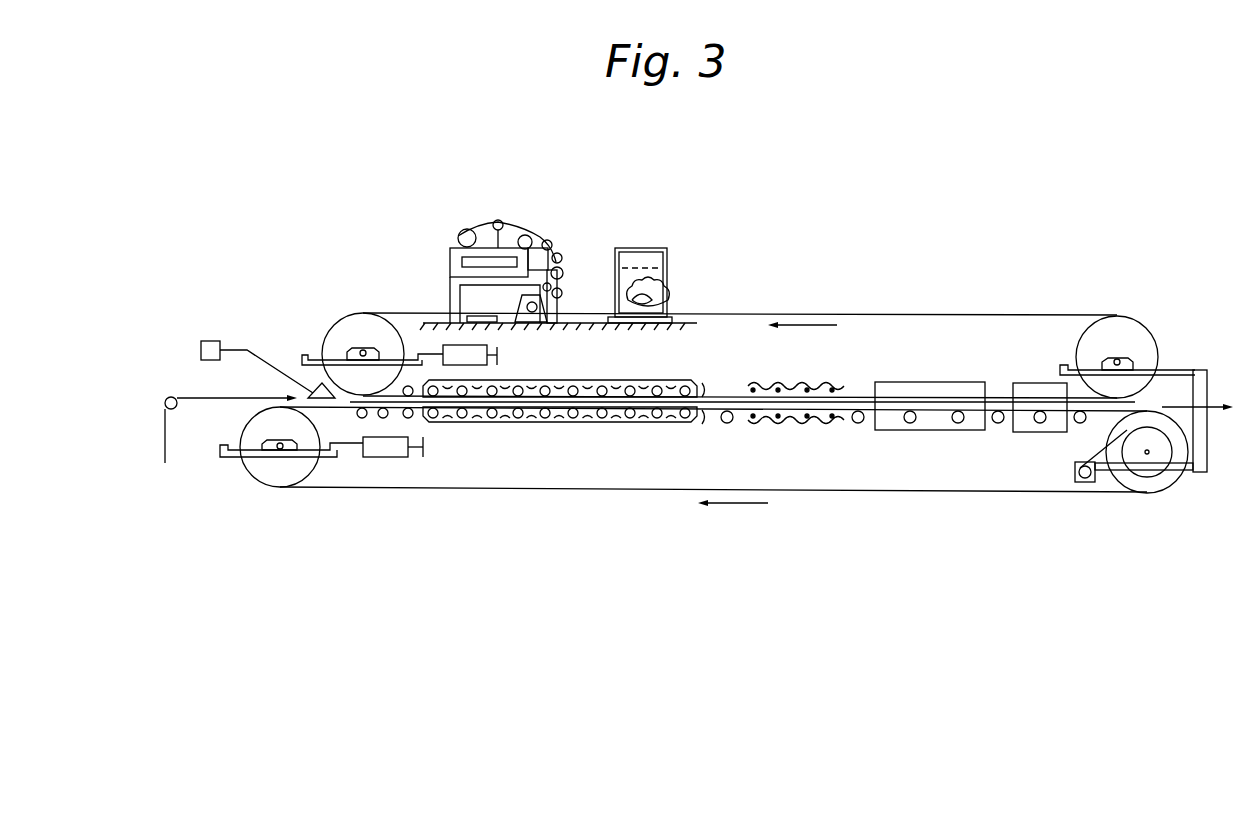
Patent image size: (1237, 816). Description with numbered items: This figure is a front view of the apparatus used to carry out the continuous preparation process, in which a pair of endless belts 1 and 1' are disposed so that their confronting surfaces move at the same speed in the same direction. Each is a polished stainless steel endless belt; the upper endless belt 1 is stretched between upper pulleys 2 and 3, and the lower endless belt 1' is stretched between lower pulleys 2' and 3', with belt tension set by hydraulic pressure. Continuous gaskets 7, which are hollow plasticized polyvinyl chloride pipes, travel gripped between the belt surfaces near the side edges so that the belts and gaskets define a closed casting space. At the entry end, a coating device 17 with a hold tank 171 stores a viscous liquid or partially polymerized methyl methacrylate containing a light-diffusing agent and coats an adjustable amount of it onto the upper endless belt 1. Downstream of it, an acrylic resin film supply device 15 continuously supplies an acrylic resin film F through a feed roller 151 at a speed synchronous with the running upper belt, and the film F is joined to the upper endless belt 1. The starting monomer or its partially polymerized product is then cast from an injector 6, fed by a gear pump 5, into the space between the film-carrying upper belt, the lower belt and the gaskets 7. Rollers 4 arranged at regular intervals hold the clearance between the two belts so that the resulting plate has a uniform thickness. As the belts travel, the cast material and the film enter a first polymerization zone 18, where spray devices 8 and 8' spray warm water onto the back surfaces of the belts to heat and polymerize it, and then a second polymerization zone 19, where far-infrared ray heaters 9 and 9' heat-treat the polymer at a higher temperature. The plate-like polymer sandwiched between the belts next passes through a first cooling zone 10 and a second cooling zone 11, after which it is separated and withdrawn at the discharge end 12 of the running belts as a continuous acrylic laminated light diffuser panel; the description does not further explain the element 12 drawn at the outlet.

The upper endless belt 1 is at (740, 334).
The lower endless belt 1' is at (713, 473).
The upper pulley 2 is at (399, 332).
The lower pulley 2' is at (321, 473).
The upper pulley 3 is at (1127, 337).
The lower pulley 3' is at (1134, 477).
The rollers 4 is at (563, 408).
The gear pump 5 is at (211, 341).
The injector 6 is at (317, 390).
The continuous gasket 7 is at (165, 463).
The spray device 8 is at (546, 368).
The spray device 8' is at (523, 441).
The far-infrared ray heater 9 is at (796, 366).
The far-infrared ray heater 9' is at (796, 444).
The first cooling zone 10 is at (923, 385).
The second cooling zone 11 is at (1039, 384).
The discharge frame 12 is at (1212, 396).
The acrylic resin film supply device 15 is at (496, 247).
The feed roller 151 is at (463, 230).
The coating device 17 is at (670, 267).
The hold tank 171 is at (666, 291).
The first polymerization zone 18 is at (527, 440).
The second polymerization zone 19 is at (779, 388).
The acrylic resin film F is at (526, 233).